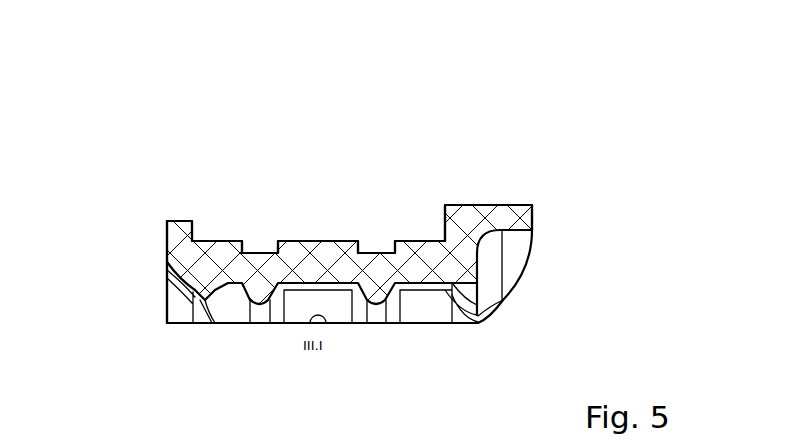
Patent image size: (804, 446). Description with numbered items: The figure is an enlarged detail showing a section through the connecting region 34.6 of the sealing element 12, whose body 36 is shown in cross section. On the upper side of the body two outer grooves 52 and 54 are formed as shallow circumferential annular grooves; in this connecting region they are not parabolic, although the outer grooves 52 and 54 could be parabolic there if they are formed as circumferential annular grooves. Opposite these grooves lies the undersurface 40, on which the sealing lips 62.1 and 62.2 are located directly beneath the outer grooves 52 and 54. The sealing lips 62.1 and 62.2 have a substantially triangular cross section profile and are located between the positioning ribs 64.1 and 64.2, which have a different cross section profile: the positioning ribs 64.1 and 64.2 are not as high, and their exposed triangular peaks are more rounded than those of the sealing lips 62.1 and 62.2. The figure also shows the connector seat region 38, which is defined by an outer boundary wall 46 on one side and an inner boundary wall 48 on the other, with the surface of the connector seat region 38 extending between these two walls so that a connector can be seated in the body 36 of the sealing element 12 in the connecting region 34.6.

The sealing element 12 is at (363, 115).
The sealing body 36 is at (305, 170).
The connector seat region 38 is at (220, 240).
The outer boundary wall 46 is at (197, 236).
The inner boundary wall 48 is at (443, 226).
The outer groove 52 is at (264, 234).
The outer groove 54 is at (376, 234).
The connecting region 34.6 is at (136, 244).
The undersurface 40 is at (225, 303).
The sealing lip 62.1 is at (250, 302).
The sealing lip 62.2 is at (361, 302).
The positioning rib 64.1 is at (203, 305).
The positioning rib 64.2 is at (433, 298).